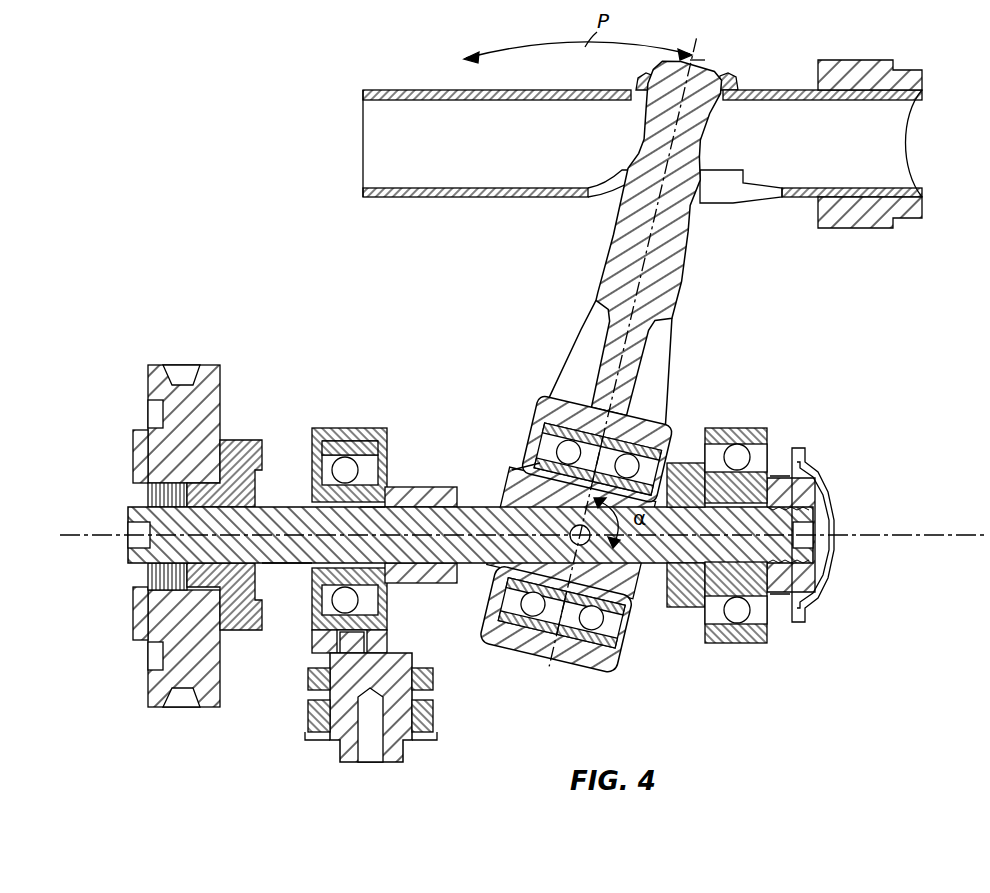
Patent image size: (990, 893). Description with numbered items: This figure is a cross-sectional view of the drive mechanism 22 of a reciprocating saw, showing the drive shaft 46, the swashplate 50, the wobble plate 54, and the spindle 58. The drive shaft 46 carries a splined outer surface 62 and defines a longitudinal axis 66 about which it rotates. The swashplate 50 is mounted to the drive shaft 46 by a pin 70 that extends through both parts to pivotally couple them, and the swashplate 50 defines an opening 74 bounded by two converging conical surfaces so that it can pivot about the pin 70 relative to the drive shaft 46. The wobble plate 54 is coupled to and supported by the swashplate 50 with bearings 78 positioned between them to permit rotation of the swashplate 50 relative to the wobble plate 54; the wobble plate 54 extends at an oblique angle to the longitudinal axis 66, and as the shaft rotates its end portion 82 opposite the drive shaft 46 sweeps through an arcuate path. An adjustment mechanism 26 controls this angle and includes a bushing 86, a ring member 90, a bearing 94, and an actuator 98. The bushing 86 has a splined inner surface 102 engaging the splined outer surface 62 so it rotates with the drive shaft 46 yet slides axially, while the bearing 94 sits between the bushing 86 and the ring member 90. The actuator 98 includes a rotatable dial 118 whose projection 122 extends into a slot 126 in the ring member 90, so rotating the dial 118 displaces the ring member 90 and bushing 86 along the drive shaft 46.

The drive mechanism 22 is at (256, 208).
The adjustment mechanism 26 is at (368, 726).
The drive shaft 46 is at (288, 508).
The swashplate 50 is at (520, 468).
The wobble plate 54 is at (612, 359).
The spindle 58 is at (393, 90).
The splined outer surface 62 is at (287, 563).
The longitudinal axis 66 is at (940, 535).
The pin 70 is at (592, 545).
The opening 74 is at (571, 533).
The bearings 78 is at (576, 533).
The end portion 82 is at (700, 72).
The bushing 86 is at (438, 486).
The ring member 90 is at (347, 428).
The bearing 94 is at (360, 441).
The actuator 98 is at (435, 715).
The splined inner surface 102 is at (372, 520).
The rotatable dial 118 is at (350, 762).
The projection 122 is at (372, 640).
The slot 126 is at (332, 653).